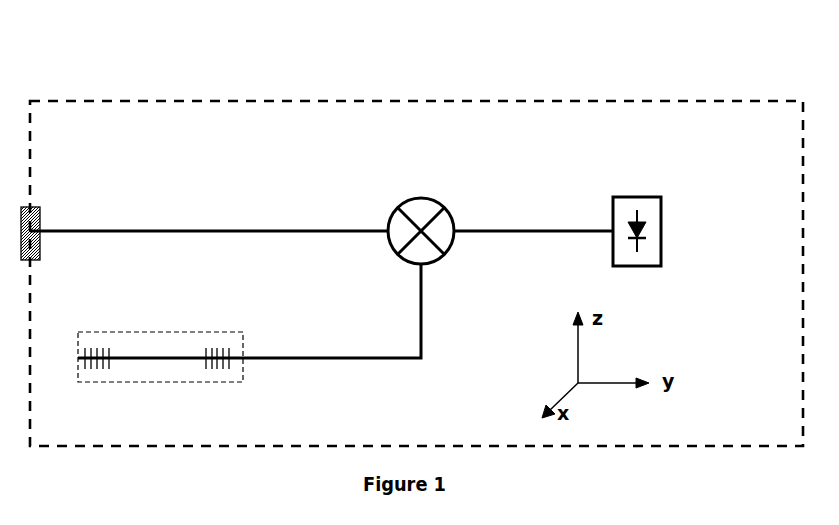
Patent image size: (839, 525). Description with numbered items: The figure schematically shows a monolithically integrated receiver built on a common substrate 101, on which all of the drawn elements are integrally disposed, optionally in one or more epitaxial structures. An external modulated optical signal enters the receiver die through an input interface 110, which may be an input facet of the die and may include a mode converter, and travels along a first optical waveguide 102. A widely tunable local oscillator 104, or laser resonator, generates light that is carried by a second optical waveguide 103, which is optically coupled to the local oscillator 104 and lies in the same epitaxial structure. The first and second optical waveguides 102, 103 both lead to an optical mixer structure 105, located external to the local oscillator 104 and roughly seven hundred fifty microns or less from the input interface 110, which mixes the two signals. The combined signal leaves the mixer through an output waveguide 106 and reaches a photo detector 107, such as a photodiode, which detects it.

The common substrate 101 is at (88, 98).
The first optical waveguide 102 is at (184, 225).
The second optical waveguide 103 is at (333, 351).
The local oscillator 104 is at (132, 327).
The optical mixer structure 105 is at (405, 197).
The output waveguide 106 is at (553, 225).
The photo detector 107 is at (636, 193).
The input interface 110 is at (38, 205).